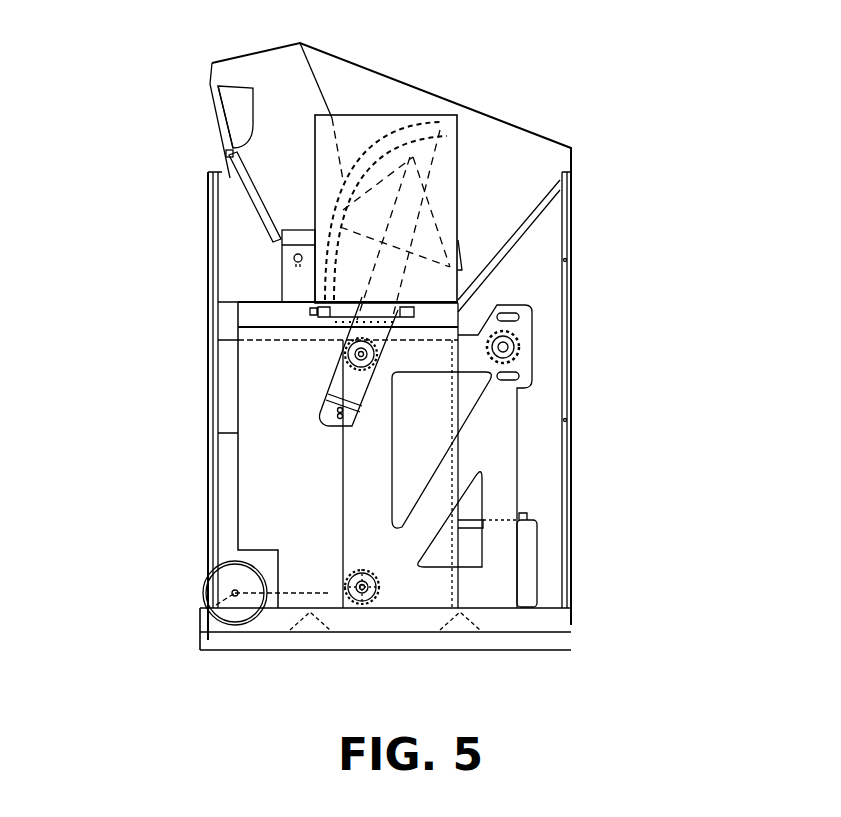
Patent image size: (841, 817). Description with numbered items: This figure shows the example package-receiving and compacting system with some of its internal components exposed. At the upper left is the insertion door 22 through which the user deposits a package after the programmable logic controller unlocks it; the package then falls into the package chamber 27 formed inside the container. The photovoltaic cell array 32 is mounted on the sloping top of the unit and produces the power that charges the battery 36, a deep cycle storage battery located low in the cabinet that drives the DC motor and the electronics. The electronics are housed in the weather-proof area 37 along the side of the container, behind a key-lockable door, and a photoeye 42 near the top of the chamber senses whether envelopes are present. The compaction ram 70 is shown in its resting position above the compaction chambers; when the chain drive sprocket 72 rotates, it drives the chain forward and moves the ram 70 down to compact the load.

The insertion door 22 is at (236, 113).
The package chamber 27 is at (225, 452).
The photovoltaic cell array 32 is at (437, 90).
The battery 36 is at (540, 548).
The weather-proof electronics area 37 is at (540, 432).
The photoeye 42 is at (284, 262).
The compaction ram 70 is at (428, 192).
The chain drive sprocket 72 is at (525, 345).